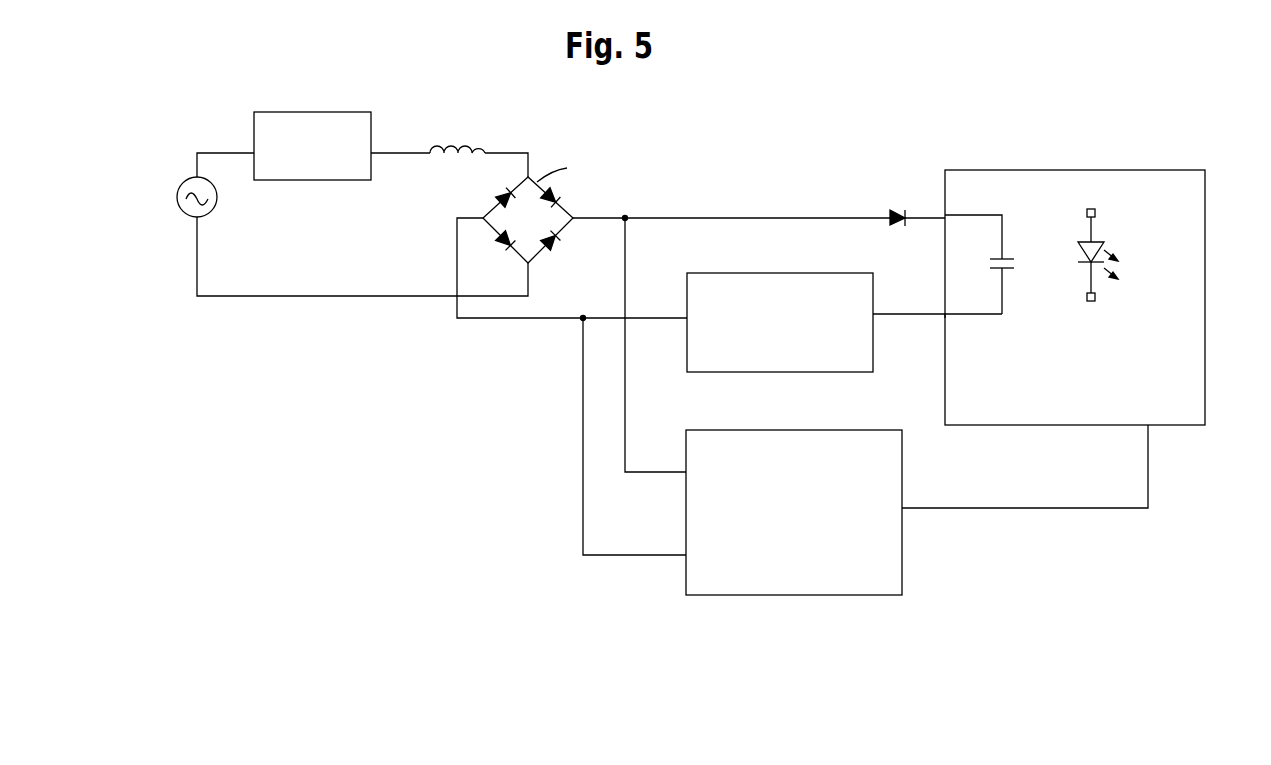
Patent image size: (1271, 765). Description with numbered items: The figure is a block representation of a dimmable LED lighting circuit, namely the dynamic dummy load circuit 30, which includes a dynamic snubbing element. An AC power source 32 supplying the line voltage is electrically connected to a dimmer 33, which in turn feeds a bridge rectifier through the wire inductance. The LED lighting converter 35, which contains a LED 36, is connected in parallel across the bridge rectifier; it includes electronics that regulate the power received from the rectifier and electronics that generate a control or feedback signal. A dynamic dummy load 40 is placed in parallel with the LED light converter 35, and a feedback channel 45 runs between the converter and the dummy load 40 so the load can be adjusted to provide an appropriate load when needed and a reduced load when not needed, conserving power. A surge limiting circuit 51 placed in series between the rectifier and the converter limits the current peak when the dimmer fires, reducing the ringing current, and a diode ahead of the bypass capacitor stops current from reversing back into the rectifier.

The dynamic dummy load circuit 30 is at (762, 114).
The AC power source 32 is at (180, 184).
The dimmer 33 is at (272, 111).
The LED lighting converter 35 is at (1100, 122).
The LED 36 is at (1103, 242).
The dynamic dummy load 40 is at (848, 597).
The feedback channel 45 is at (1113, 510).
The surge limiting circuit 51 is at (734, 273).